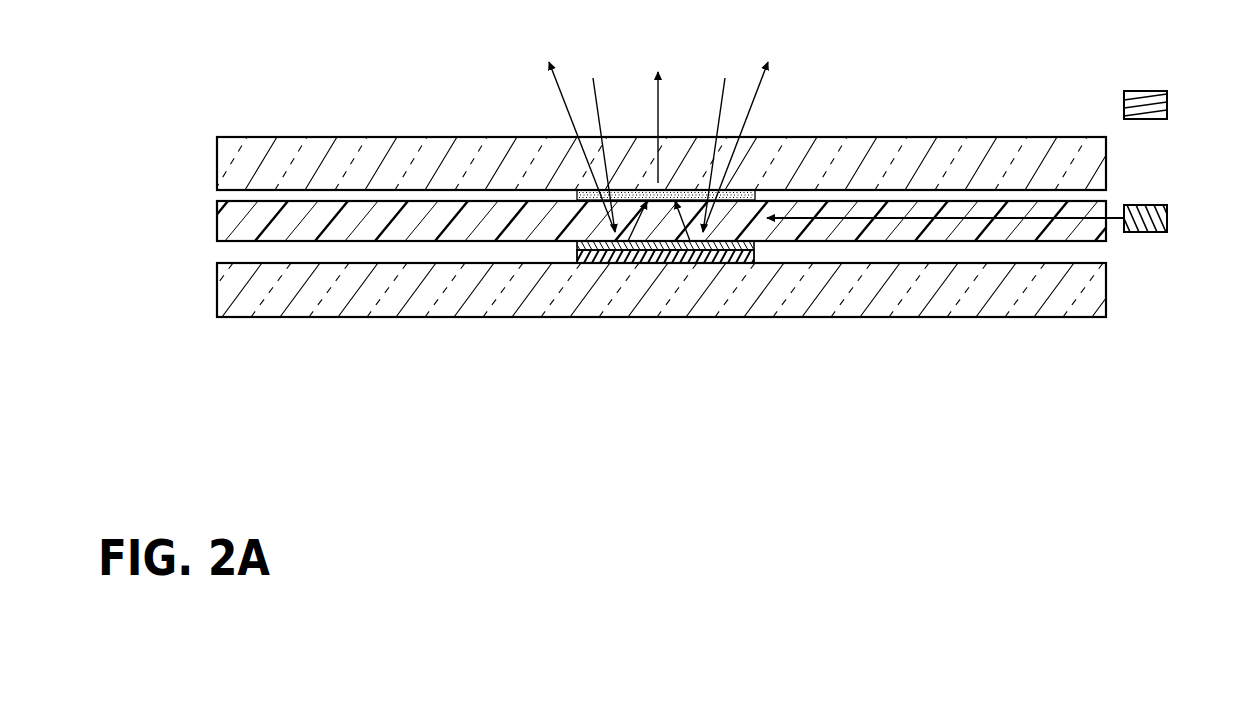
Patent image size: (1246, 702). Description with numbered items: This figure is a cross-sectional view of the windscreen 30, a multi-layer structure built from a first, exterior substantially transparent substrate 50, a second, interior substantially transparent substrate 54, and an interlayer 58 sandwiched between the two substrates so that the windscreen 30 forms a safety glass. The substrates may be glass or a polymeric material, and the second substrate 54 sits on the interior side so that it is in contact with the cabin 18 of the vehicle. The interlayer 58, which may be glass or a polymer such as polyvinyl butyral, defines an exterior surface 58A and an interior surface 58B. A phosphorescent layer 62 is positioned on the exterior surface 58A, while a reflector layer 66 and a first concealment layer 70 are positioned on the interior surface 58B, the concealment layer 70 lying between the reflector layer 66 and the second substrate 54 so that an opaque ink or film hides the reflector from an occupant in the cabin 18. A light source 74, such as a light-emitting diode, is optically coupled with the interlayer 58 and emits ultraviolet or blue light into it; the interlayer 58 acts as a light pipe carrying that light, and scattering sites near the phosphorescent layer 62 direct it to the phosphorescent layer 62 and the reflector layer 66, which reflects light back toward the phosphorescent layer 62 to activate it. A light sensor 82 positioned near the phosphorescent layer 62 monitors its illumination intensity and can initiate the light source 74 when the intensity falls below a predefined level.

The cabin 18 is at (693, 365).
The windscreen 30 is at (942, 73).
The first substantially transparent substrate 50 is at (243, 160).
The second substantially transparent substrate 54 is at (252, 292).
The interlayer 58 is at (248, 220).
The exterior surface 58A is at (338, 200).
The interior surface 58B is at (362, 242).
The phosphorescent layer 62 is at (577, 195).
The reflector layer 66 is at (574, 248).
The first concealment layer 70 is at (595, 257).
The light source 74 is at (1168, 216).
The light sensor 82 is at (1168, 106).